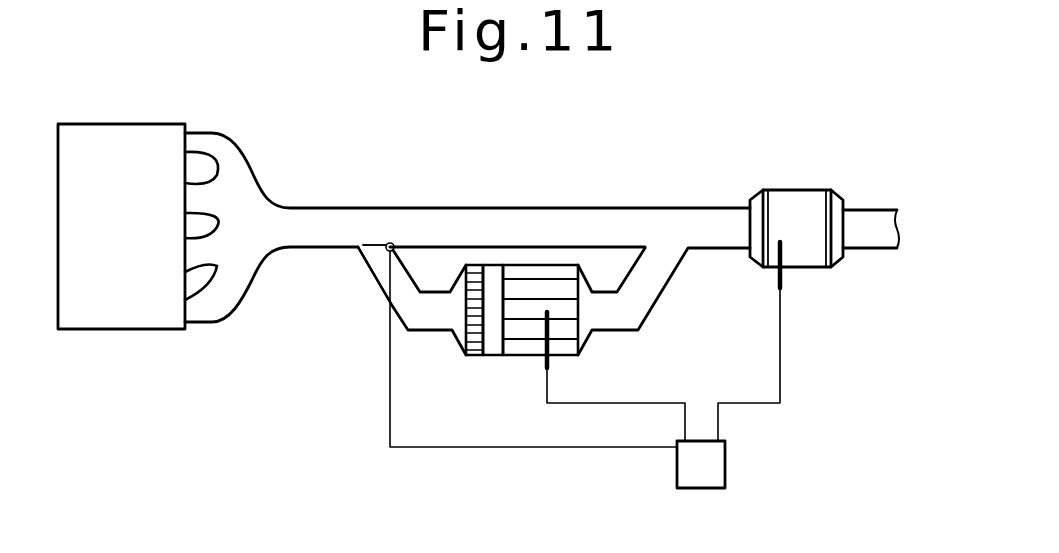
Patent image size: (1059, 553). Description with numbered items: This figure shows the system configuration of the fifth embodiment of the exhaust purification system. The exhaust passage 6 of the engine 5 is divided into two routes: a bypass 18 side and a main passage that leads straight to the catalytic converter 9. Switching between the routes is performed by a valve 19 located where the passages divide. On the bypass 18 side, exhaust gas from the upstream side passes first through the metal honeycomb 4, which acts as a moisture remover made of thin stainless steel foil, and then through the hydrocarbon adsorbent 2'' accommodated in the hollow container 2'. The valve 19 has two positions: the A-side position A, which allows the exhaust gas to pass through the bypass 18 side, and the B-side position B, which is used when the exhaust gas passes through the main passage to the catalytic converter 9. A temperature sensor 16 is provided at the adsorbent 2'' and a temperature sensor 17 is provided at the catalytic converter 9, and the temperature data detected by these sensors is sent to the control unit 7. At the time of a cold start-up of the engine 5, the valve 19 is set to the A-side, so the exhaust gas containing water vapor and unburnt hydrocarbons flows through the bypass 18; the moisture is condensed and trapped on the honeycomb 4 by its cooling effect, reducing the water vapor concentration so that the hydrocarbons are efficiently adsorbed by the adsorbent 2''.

The engine 5 is at (117, 317).
The exhaust passage 6 is at (290, 237).
The valve 19 is at (371, 245).
The A-side valve position A is at (377, 243).
The B-side valve position B is at (378, 255).
The bypass 18 is at (638, 305).
The metal honeycomb 4 is at (473, 360).
The hollow container 2' is at (483, 350).
The hydrocarbon adsorbent 2'' is at (540, 335).
The temperature sensor 16 is at (553, 360).
The catalytic converter 9 is at (810, 208).
The temperature sensor 17 is at (783, 278).
The control unit 7 is at (715, 475).